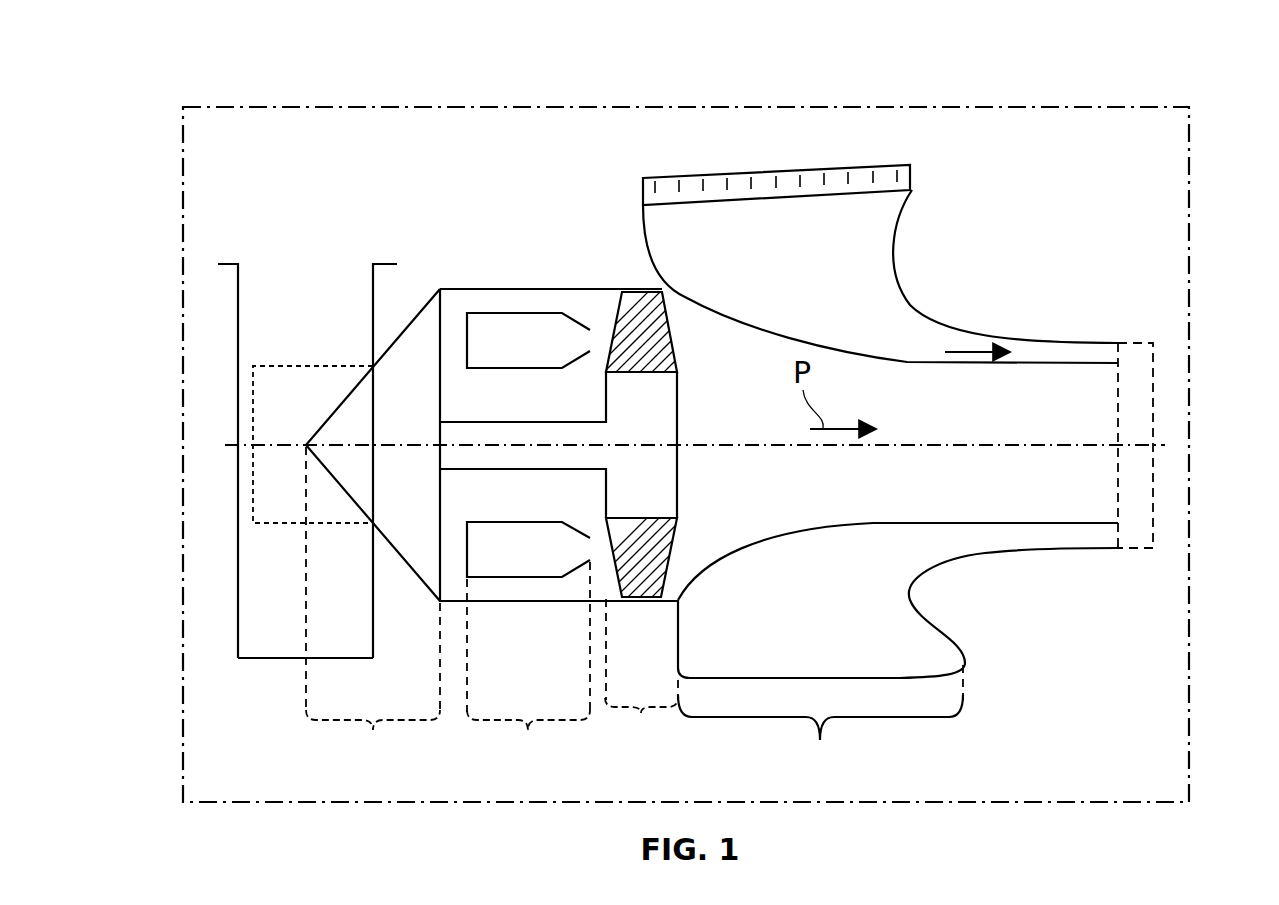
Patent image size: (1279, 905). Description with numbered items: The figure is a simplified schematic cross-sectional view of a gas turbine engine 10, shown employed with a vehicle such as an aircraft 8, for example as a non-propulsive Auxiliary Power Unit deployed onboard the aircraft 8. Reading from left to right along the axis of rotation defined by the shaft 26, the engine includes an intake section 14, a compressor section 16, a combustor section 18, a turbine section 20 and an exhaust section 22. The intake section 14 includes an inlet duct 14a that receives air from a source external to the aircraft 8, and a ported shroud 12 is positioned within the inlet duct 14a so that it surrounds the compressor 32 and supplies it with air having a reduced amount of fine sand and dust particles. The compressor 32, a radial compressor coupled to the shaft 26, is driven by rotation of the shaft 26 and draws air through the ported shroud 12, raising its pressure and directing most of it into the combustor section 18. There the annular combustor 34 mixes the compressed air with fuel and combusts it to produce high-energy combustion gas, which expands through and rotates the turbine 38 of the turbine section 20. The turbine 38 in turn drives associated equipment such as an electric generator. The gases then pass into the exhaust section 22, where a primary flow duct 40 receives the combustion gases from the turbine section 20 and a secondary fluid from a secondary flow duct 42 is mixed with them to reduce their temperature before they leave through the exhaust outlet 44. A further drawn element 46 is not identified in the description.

The aircraft 8 is at (1128, 107).
The gas turbine engine 10 is at (171, 72).
The ported shroud 12 is at (293, 364).
The intake section 14 is at (293, 262).
The inlet duct 14a is at (288, 660).
The compressor section 16 is at (373, 608).
The combustor section 18 is at (558, 529).
The turbine section 20 is at (641, 676).
The exhaust section 22 is at (898, 651).
The shaft 26 is at (540, 443).
The compressor 32 is at (428, 578).
The annular combustor 34 is at (523, 320).
The turbine 38 is at (633, 310).
The primary flow duct 40 is at (890, 367).
The secondary flow duct 42 is at (973, 352).
The exhaust outlet 44 is at (1143, 492).
The liner panel 46 is at (912, 178).